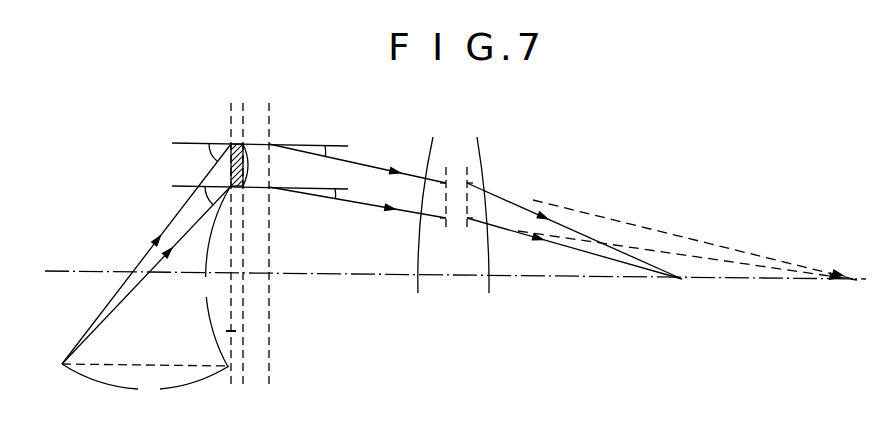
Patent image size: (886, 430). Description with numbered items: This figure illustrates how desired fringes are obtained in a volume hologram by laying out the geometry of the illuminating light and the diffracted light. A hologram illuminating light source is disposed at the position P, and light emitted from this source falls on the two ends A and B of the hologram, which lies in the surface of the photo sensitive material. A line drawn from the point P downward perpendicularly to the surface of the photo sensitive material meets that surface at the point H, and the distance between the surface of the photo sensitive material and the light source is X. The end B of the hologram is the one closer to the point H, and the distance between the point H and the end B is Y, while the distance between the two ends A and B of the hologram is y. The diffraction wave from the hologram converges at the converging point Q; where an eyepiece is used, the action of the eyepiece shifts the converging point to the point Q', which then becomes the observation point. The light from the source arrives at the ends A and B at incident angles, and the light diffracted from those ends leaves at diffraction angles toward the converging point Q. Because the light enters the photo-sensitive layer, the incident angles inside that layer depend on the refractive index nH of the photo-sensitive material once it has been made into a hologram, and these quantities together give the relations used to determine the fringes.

The position of hologram illuminating light source P is at (136, 263).
The end of hologram A is at (220, 132).
The end of hologram B is at (218, 180).
The point of intersection H is at (145, 357).
The converging point with eyepiece Q' is at (581, 246).
The converging point Q is at (689, 255).
The distance between photo sensitive material surface and light source X is at (145, 382).
The distance between point H and end B Y is at (215, 277).
The distance between ends A and B y is at (250, 165).
The refractive index of photo-sensitive material nH is at (236, 331).